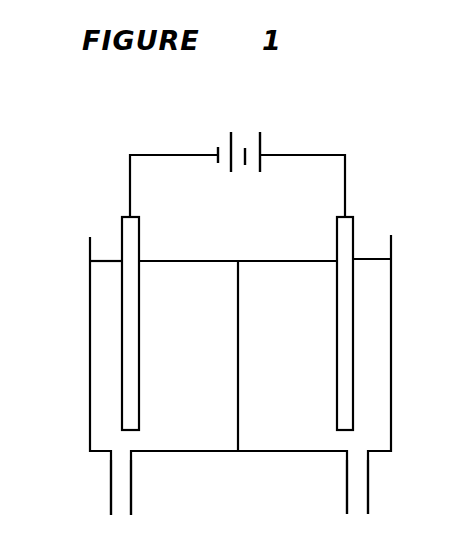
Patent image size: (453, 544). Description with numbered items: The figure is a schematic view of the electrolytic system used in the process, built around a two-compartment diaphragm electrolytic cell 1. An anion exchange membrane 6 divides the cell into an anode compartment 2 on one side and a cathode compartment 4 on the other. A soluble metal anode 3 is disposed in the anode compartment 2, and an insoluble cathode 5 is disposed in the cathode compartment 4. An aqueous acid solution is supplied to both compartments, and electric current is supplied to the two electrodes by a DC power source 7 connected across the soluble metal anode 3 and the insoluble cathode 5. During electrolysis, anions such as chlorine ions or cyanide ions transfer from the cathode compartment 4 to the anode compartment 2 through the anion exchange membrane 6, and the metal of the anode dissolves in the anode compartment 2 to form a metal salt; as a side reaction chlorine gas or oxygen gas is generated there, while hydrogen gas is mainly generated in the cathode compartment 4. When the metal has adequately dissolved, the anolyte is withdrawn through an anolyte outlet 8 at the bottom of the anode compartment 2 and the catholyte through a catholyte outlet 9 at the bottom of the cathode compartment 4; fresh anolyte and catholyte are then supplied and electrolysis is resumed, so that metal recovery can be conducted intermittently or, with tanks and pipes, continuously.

The diaphragm electrolytic cell 1 is at (392, 345).
The anode compartment 2 is at (106, 349).
The soluble metal anode 3 is at (131, 305).
The cathode compartment 4 is at (370, 396).
The insoluble cathode 5 is at (352, 295).
The anion exchange membrane 6 is at (239, 428).
The DC power source 7 is at (260, 141).
The anolyte outlet 8 is at (131, 493).
The catholyte outlet 9 is at (368, 492).